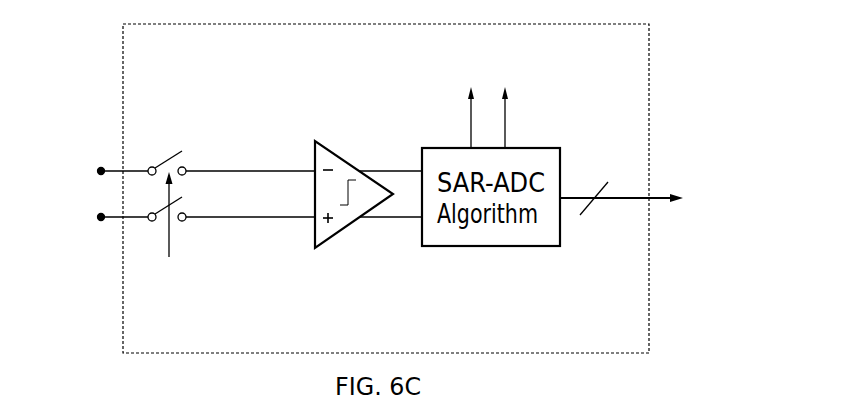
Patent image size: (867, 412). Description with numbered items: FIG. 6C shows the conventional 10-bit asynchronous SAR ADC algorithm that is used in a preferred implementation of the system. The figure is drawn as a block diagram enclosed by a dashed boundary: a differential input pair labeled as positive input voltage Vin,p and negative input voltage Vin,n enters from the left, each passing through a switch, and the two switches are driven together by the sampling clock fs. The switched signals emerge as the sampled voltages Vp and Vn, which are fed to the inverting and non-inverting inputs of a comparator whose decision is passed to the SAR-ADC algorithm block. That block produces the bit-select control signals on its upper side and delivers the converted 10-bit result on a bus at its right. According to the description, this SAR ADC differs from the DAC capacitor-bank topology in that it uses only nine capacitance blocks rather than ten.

The positive differential input voltage Vin,p is at (111, 157).
The negative differential input voltage Vin,n is at (111, 212).
The sampled positive input to comparator Vp is at (304, 148).
The sampled negative input to comparator Vn is at (304, 237).
The sampling clock frequency controlling the input switches fs is at (162, 247).
The asynchronous SAR ADC algorithm 10 is at (668, 199).